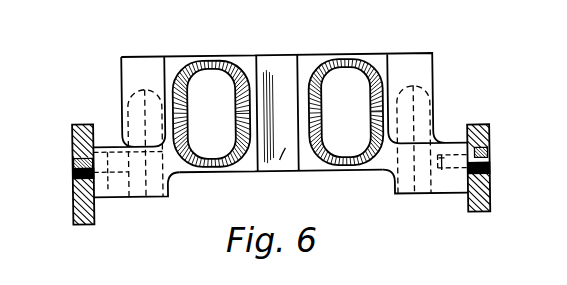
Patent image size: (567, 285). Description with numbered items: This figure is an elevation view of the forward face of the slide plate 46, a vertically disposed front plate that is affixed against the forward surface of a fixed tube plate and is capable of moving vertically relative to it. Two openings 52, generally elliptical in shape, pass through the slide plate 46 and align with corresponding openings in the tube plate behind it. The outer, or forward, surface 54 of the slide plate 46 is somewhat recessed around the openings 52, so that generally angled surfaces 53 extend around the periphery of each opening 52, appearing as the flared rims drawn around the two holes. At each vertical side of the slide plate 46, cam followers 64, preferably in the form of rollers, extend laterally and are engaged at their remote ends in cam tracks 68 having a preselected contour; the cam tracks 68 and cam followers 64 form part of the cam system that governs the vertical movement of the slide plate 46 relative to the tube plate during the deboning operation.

The slide plate 46 is at (104, 109).
The openings 52 is at (201, 73).
The angled surface 53 is at (238, 70).
The forward surface 54 is at (262, 173).
The cam followers 64 is at (72, 172).
The cam tracks 68 is at (73, 163).